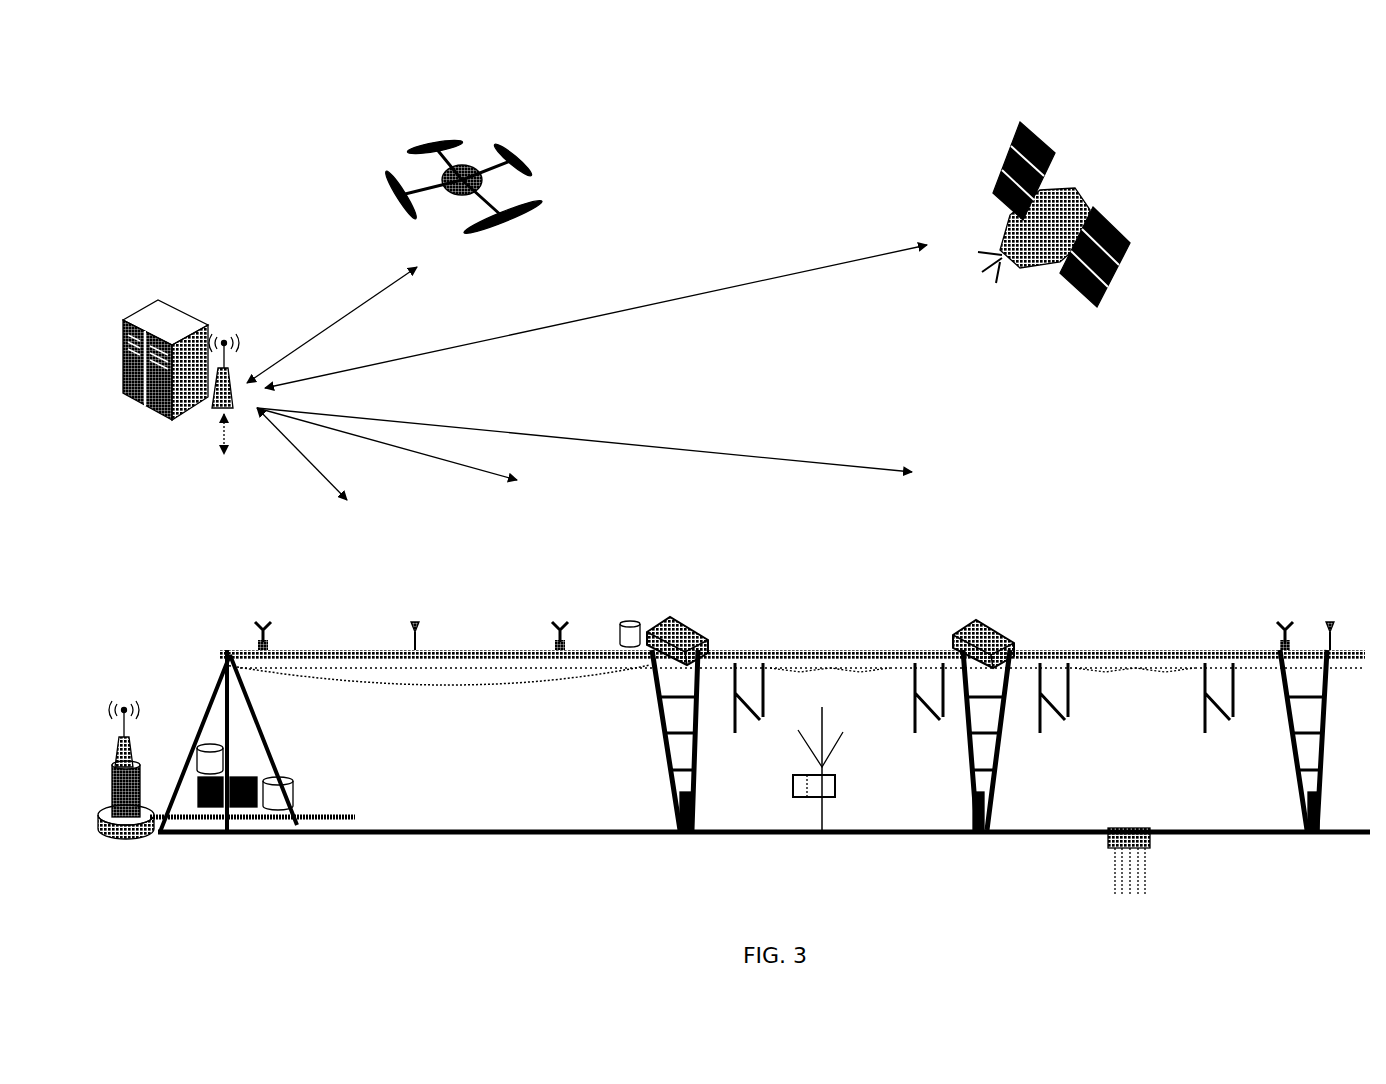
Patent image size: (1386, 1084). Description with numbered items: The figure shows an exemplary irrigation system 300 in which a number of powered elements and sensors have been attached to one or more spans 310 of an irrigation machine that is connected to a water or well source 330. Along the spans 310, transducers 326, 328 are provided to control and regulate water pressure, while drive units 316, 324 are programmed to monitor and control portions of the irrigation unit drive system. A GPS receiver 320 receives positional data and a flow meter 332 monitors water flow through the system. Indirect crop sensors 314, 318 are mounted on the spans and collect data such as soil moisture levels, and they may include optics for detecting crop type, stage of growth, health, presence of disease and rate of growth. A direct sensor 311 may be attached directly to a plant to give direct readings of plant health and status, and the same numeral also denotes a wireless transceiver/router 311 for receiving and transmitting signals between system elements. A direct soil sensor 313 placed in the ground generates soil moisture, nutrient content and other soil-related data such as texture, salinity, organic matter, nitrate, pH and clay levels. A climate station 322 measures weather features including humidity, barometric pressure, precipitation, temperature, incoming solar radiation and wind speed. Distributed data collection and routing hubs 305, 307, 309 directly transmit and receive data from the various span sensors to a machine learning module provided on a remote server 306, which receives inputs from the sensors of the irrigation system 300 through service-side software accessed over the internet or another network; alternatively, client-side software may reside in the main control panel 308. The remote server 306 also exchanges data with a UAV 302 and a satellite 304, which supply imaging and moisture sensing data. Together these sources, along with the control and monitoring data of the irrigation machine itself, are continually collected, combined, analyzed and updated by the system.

The system 300 is at (803, 112).
The UAV 302 is at (486, 145).
The satellite 304 is at (1100, 190).
The data collection and routing hub 305 is at (263, 625).
The remote server 306 is at (160, 300).
The data collection and routing hub 307 is at (560, 628).
The main control panel 308 is at (227, 780).
The data collection and routing hub 309 is at (1278, 622).
The span 310 is at (468, 652).
The direct sensor 311 is at (413, 622).
The direct soil sensor 313 is at (1110, 838).
The indirect crop sensor 314 is at (920, 712).
The drive unit 316 is at (965, 630).
The indirect crop sensor 318 is at (1222, 712).
The GPS receiver 320 is at (1330, 622).
The climate station 322 is at (124, 708).
The drive unit 324 is at (663, 630).
The transducer 326 is at (628, 622).
The transducer 328 is at (295, 787).
The water or well source 330 is at (333, 832).
The flow meter 332 is at (200, 747).